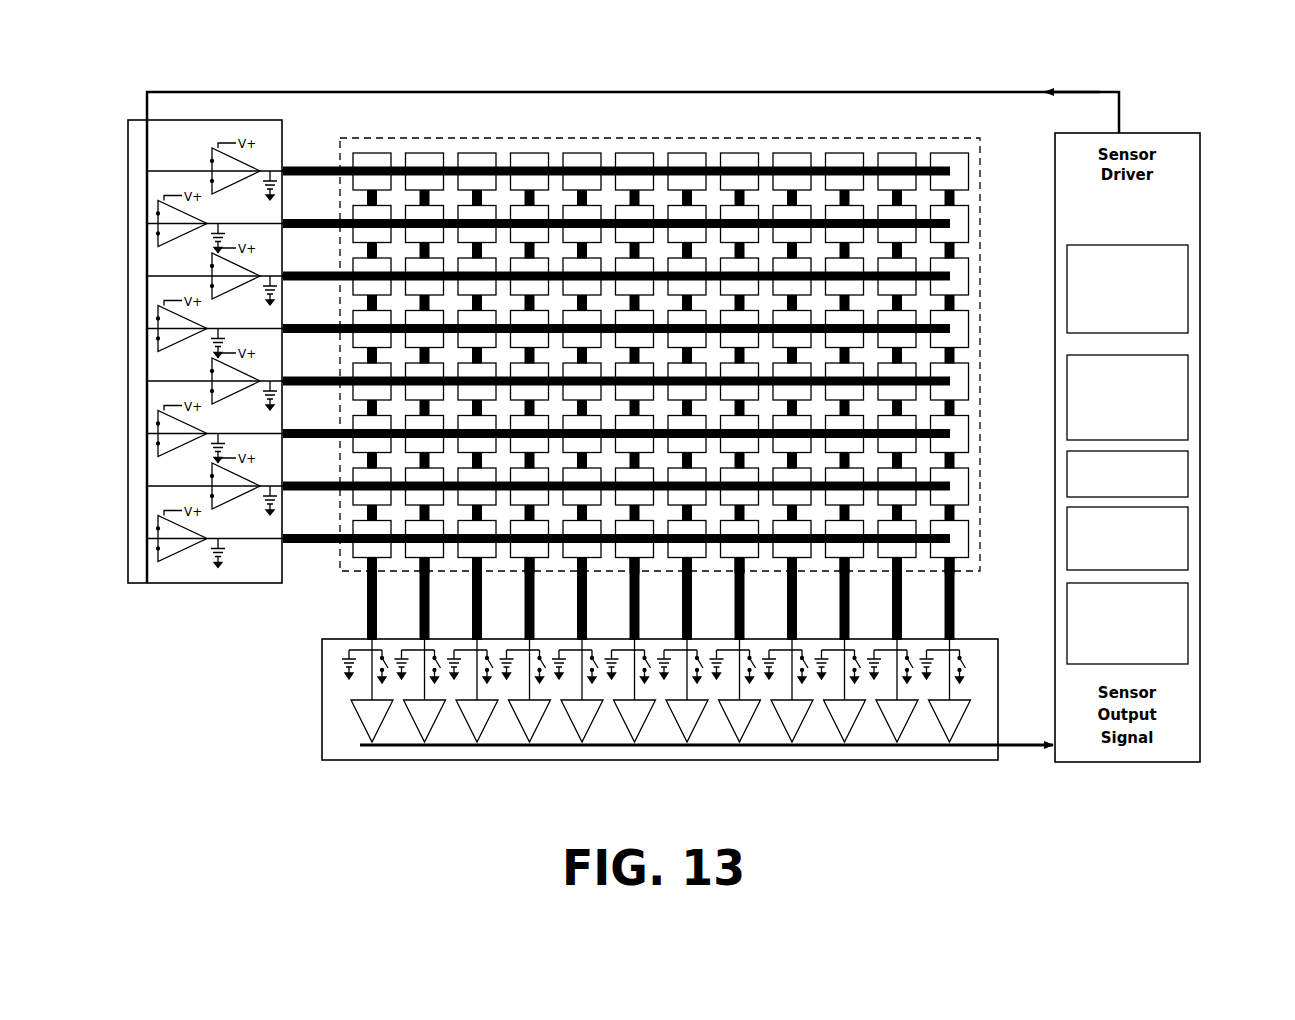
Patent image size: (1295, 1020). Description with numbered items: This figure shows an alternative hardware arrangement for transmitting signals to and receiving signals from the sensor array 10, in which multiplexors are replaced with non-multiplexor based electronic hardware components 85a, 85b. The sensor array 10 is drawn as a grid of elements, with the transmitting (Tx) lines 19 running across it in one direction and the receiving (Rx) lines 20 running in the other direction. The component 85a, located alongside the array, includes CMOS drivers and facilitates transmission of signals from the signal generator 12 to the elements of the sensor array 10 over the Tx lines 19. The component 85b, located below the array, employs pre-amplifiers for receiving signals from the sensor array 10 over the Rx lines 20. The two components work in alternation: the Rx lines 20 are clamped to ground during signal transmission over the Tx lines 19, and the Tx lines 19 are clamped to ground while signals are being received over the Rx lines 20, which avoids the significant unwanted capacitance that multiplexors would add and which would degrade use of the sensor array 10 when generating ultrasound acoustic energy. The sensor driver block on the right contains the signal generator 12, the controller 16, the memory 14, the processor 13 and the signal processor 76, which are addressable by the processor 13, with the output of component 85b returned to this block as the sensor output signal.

The non-multiplexor based electronic hardware component 85a is at (126, 150).
The transmitting (Tx) lines 19 is at (292, 166).
The sensor array 10 is at (338, 572).
The receiving (Rx) lines 20 is at (958, 600).
The non-multiplexor based electronic hardware component 85b is at (930, 766).
The signal generator 12 is at (1192, 287).
The controller 16 is at (1192, 401).
The memory 14 is at (1192, 474).
The processor 13 is at (1192, 541).
The signal processor 76 is at (1192, 618).